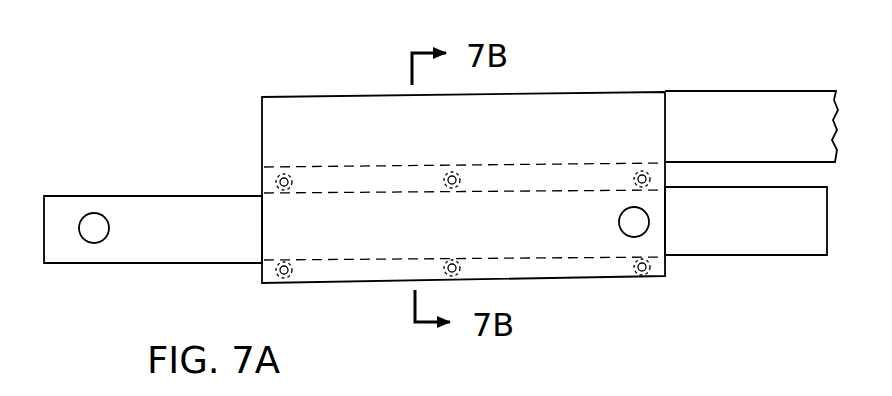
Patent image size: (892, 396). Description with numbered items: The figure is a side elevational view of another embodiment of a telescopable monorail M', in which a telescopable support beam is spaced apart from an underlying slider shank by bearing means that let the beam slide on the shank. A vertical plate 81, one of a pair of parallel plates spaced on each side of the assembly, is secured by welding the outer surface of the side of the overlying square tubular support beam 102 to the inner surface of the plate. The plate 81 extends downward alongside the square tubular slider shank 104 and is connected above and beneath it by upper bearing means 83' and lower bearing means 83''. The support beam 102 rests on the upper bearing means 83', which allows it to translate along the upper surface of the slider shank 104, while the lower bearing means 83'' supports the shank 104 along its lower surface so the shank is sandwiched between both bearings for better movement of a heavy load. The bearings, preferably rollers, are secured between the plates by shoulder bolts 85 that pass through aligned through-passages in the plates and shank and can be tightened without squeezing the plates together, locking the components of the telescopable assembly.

The telescopable monorail M' is at (415, 158).
The vertical parallel plate 81 is at (375, 281).
The upper bearing means 83' is at (463, 163).
The lower bearing means 83'' is at (463, 244).
The shoulder bolt 85 is at (628, 276).
The support beam 102 is at (764, 142).
The slider shank 104 is at (768, 227).